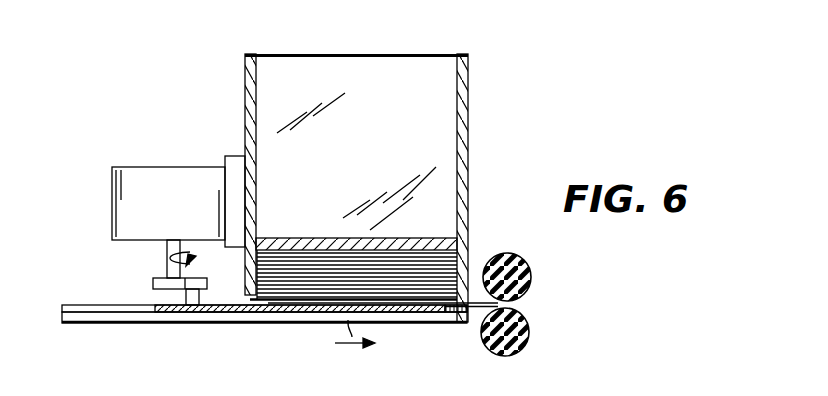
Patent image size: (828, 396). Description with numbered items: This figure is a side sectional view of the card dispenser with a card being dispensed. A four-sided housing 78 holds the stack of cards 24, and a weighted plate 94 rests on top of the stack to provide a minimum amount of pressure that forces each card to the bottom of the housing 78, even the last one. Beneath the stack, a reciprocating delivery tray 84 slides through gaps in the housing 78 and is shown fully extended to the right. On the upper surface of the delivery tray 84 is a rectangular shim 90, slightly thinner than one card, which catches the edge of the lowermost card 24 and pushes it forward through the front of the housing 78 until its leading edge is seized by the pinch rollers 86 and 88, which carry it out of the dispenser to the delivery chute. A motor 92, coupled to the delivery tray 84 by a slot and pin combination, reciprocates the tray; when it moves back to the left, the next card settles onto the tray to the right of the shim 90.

The housing 78 is at (250, 95).
The motor 92 is at (156, 178).
The weighted plate 94 is at (327, 238).
The cards 24 is at (404, 272).
The pinch roller 86 is at (518, 256).
The pinch roller 88 is at (512, 368).
The delivery tray 84 is at (215, 313).
The shim 90 is at (283, 315).